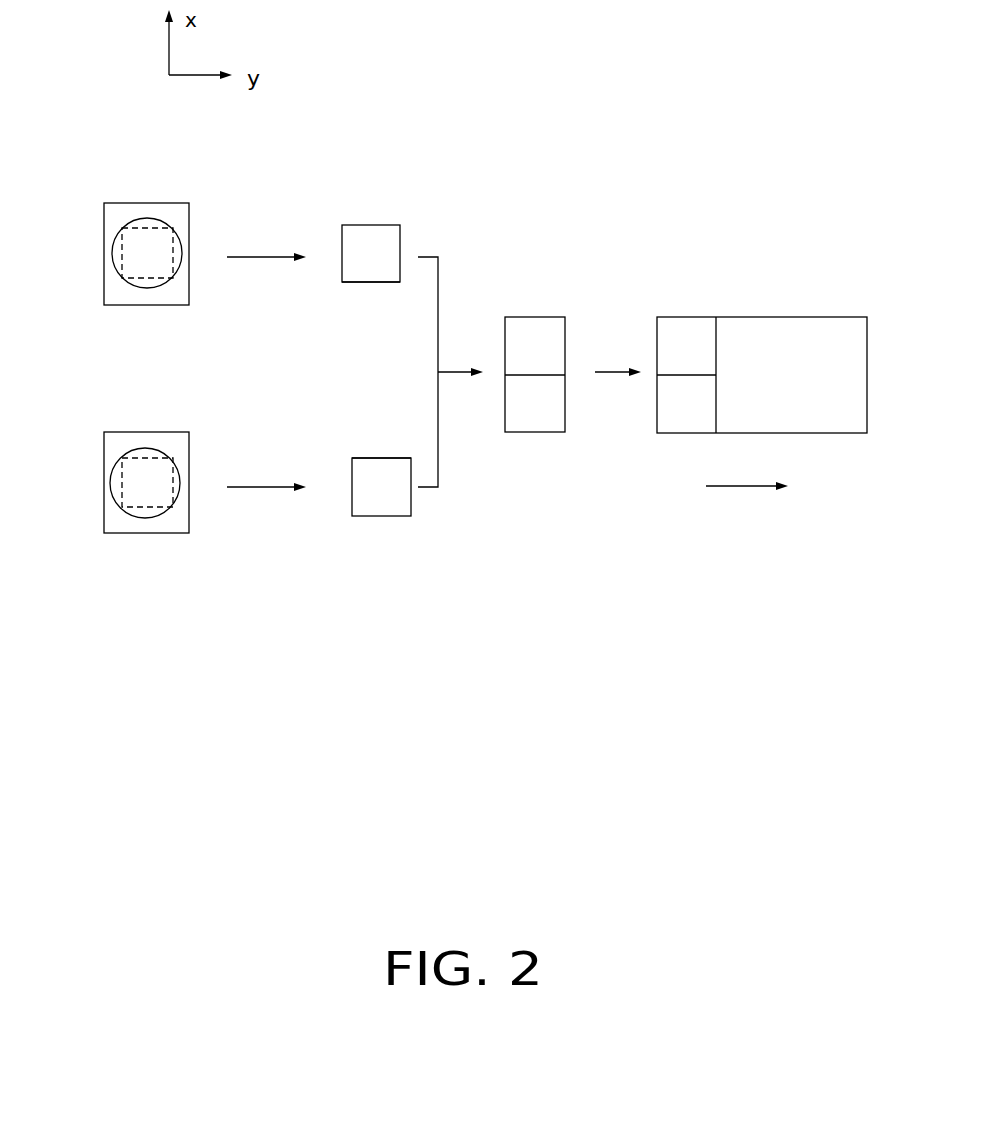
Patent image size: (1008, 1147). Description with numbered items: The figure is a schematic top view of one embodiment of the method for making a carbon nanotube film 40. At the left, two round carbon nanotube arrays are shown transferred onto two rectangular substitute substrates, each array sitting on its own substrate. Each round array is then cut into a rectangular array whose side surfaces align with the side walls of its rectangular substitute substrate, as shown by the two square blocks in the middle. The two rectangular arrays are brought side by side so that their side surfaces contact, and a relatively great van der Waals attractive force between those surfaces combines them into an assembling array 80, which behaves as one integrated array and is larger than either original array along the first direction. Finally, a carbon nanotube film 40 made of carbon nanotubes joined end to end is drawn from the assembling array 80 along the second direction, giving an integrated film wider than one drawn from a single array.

The assembling array 80 is at (538, 278).
The carbon nanotube film 40 is at (800, 330).